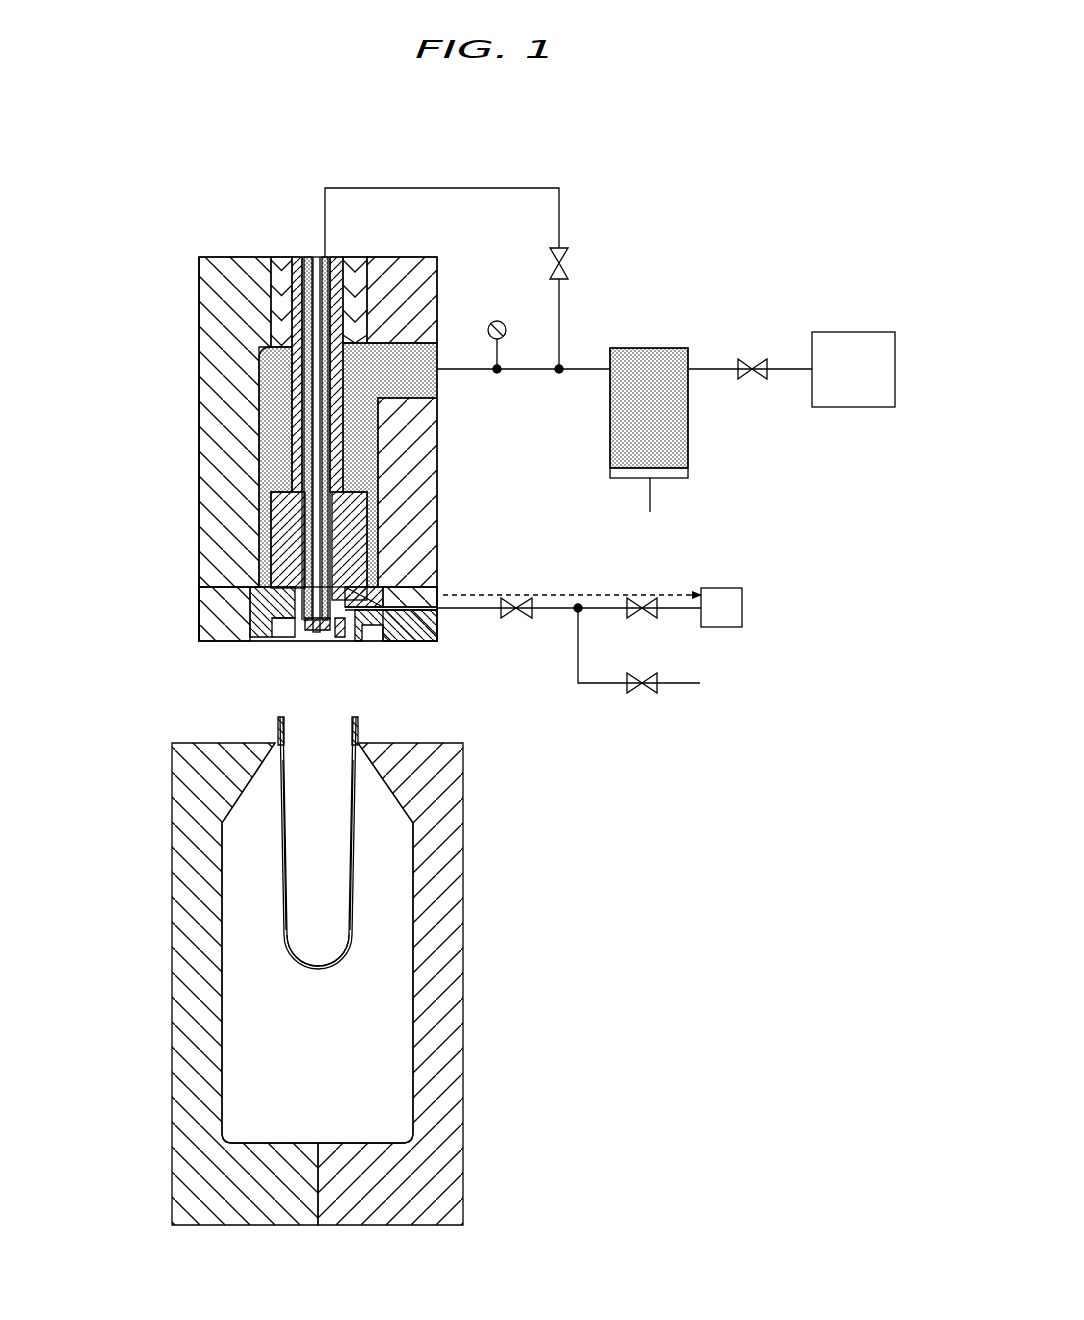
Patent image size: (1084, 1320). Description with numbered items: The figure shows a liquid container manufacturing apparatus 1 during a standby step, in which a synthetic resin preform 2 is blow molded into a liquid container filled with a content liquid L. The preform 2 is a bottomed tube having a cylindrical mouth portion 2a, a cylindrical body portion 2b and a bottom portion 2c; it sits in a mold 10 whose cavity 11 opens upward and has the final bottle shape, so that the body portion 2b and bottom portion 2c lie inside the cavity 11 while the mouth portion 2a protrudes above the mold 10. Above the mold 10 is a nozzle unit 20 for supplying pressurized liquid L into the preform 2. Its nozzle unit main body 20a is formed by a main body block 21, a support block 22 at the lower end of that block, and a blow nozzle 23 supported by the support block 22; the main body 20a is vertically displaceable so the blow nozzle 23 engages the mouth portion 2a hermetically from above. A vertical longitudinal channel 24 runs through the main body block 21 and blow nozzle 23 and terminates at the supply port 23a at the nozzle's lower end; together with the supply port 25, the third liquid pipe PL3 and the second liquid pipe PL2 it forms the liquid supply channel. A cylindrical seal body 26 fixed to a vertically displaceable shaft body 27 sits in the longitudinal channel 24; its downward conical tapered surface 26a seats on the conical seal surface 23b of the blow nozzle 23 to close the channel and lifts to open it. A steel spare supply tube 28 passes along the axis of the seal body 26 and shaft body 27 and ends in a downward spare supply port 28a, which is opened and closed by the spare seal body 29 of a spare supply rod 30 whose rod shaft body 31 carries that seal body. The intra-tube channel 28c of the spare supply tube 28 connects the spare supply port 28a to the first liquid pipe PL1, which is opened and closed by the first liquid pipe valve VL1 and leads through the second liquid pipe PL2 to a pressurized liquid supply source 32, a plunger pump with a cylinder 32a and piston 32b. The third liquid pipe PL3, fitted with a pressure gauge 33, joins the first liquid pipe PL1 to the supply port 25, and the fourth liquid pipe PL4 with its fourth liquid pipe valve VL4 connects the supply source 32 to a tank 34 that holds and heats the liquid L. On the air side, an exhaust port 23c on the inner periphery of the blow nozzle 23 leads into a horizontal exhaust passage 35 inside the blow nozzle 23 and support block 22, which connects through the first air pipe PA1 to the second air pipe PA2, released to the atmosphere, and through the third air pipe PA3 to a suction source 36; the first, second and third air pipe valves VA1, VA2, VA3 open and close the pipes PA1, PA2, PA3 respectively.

The liquid container manufacturing apparatus 1 is at (733, 199).
The preform 2 is at (352, 870).
The mouth portion 2a is at (358, 720).
The body portion 2b is at (353, 842).
The bottom portion 2c is at (318, 972).
The mold 10 is at (463, 912).
The cavity 11 is at (413, 1040).
The nozzle unit 20 is at (168, 353).
The nozzle unit main body 20a is at (199, 398).
The main body block 21 is at (222, 443).
The support block 22 is at (225, 625).
The blow nozzle 23 is at (275, 598).
The supply port 23a is at (290, 640).
The seal surface 23b is at (410, 548).
The exhaust port 23c is at (341, 626).
The longitudinal channel 24 is at (368, 445).
The supply port 25 is at (410, 378).
The seal body 26 is at (355, 525).
The tapered surface 26a is at (410, 573).
The shaft body 27 is at (292, 368).
The spare supply tube 28 is at (302, 507).
The spare supply port 28a is at (310, 631).
The intra-tube channel 28c is at (323, 296).
The spare seal body 29 is at (318, 634).
The spare supply rod 30 is at (305, 530).
The rod shaft body 31 is at (318, 557).
The pressurized liquid supply source 32 is at (690, 430).
The cylinder 32a is at (688, 400).
The piston 32b is at (664, 470).
The pressure gauge 33 is at (497, 320).
The tank 34 is at (850, 332).
The exhaust passage 35 is at (398, 621).
The suction source 36 is at (722, 588).
The liquid L is at (272, 467).
The first liquid pipe PL1 is at (480, 188).
The second liquid pipe PL2 is at (580, 369).
The third liquid pipe PL3 is at (530, 369).
The fourth liquid pipe PL4 is at (700, 369).
The first liquid pipe valve VL1 is at (565, 250).
The fourth liquid pipe valve VL4 is at (775, 375).
The first air pipe PA1 is at (555, 600).
The second air pipe PA2 is at (590, 690).
The third air pipe PA3 is at (598, 602).
The first air pipe valve VA1 is at (523, 620).
The second air pipe valve VA2 is at (635, 672).
The third air pipe valve VA3 is at (650, 622).